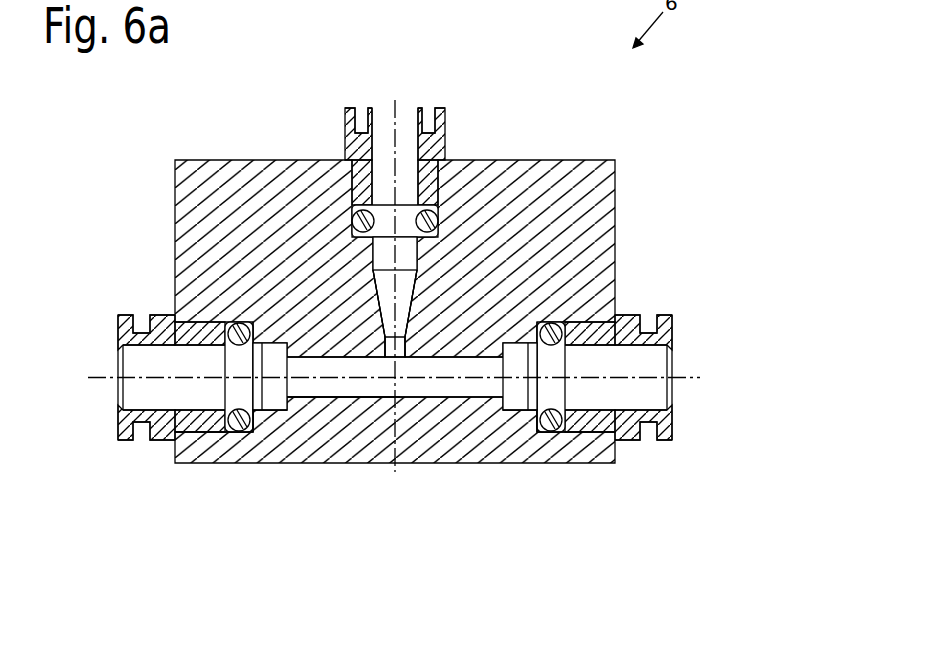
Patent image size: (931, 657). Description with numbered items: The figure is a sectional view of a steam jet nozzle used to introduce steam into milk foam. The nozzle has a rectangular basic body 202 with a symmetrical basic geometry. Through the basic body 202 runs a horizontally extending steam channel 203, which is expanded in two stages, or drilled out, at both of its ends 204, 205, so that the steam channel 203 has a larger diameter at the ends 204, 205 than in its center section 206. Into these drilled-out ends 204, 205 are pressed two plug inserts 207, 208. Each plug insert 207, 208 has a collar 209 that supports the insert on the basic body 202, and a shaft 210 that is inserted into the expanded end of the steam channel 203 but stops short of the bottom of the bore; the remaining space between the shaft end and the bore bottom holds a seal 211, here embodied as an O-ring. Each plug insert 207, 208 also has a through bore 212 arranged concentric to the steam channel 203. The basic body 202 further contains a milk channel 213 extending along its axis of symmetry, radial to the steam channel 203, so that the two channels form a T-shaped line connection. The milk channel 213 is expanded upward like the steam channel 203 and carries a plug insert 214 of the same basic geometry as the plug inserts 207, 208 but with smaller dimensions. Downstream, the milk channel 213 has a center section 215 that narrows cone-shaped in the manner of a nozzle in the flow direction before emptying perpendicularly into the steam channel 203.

The basic body 202 is at (613, 165).
The steam channel 203 is at (445, 383).
The first end of the steam channel 204 is at (202, 440).
The second end of the steam channel 205 is at (589, 441).
The center section of the steam channel 206 is at (375, 383).
The first plug insert 207 is at (150, 441).
The second plug insert 208 is at (643, 434).
The collar 209 is at (445, 141).
The shaft 210 is at (477, 160).
The seal 211 is at (238, 431).
The through bore 212 is at (385, 130).
The milk channel 213 is at (398, 308).
The plug insert of the milk channel 214 is at (357, 137).
The center section of the milk channel 215 is at (398, 308).